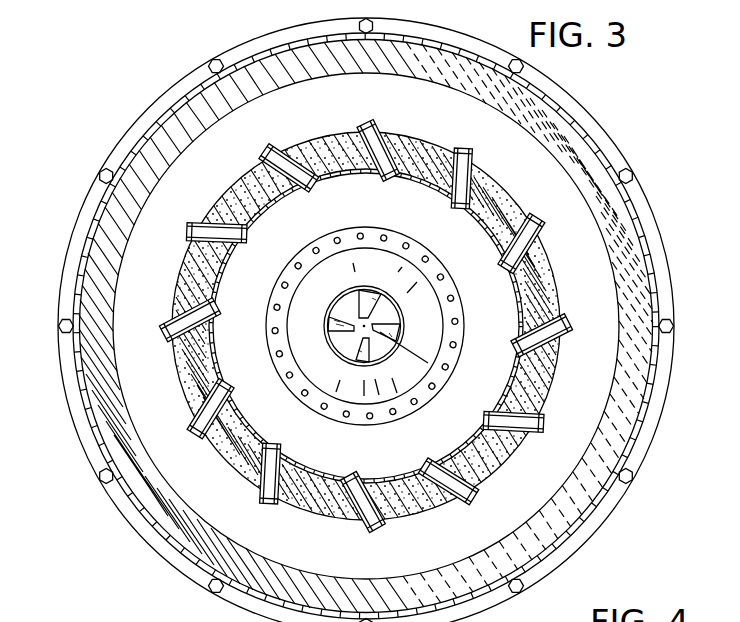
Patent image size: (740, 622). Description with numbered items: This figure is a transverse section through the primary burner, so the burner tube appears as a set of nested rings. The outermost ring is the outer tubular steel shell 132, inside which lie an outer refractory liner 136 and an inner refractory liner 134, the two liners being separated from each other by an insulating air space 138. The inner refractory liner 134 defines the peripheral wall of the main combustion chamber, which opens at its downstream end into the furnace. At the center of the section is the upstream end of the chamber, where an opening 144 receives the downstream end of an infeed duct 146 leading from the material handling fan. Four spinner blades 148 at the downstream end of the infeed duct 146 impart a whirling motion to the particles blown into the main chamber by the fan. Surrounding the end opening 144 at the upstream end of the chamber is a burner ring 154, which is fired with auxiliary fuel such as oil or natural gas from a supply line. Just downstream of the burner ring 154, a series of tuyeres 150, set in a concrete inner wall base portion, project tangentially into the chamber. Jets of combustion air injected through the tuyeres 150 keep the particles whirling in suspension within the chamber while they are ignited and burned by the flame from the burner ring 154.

The outer tubular steel shell 132 is at (70, 428).
The inner refractory liner 134 is at (207, 342).
The outer refractory liner 136 is at (113, 357).
The insulating air space 138 is at (200, 477).
The opening 144 is at (444, 232).
The infeed duct 146 is at (336, 298).
The spinner blades 148 is at (329, 317).
The tuyeres 150 is at (244, 232).
The burner ring 154 is at (349, 228).